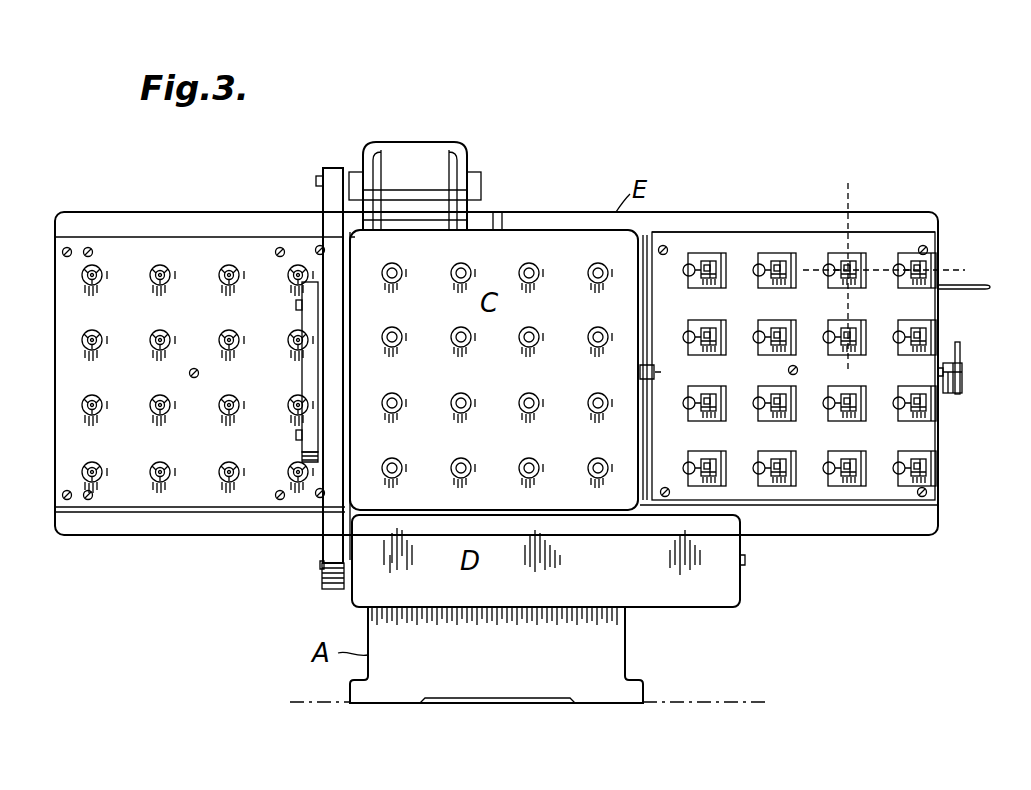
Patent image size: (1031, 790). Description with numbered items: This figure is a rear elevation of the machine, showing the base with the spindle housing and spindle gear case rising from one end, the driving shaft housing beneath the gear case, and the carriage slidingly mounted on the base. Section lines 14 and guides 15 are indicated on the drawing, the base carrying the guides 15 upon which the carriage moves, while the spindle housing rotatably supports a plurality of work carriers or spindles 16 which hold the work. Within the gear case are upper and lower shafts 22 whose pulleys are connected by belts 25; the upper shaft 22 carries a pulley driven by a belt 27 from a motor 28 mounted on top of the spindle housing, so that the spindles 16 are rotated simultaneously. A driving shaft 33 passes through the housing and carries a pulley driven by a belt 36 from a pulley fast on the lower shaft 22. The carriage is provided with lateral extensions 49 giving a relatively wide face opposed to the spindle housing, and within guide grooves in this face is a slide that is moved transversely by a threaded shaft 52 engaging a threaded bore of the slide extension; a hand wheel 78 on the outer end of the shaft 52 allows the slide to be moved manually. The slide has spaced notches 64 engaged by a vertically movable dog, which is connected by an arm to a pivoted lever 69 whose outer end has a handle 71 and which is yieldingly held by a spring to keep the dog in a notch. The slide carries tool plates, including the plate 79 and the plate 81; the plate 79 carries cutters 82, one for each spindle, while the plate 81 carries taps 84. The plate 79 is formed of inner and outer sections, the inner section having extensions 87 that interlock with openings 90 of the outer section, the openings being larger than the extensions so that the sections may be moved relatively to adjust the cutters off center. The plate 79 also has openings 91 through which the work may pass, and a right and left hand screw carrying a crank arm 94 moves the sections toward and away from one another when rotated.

The section line 14 is at (811, 256).
The guides 15 is at (840, 198).
The work carriers or spindles 16 is at (594, 282).
The shafts 22 is at (296, 300).
The belts 25 is at (302, 374).
The belt 27 is at (323, 194).
The motor 28 is at (433, 146).
The driving shaft 33 is at (320, 575).
The belt 36 is at (323, 548).
The lateral extensions 49 is at (144, 535).
The threaded shaft 52 is at (963, 367).
The spaced notches 64 is at (500, 214).
The lever 69 is at (940, 292).
The handle 71 is at (990, 288).
The hand wheel 78 is at (963, 346).
The plate 79 is at (749, 242).
The plate 81 is at (202, 243).
The cutters 82 is at (775, 352).
The taps 84 is at (166, 284).
The extensions 87 is at (904, 254).
The openings 90 is at (865, 260).
The openings 91 is at (898, 467).
The crank arm 94 is at (938, 392).